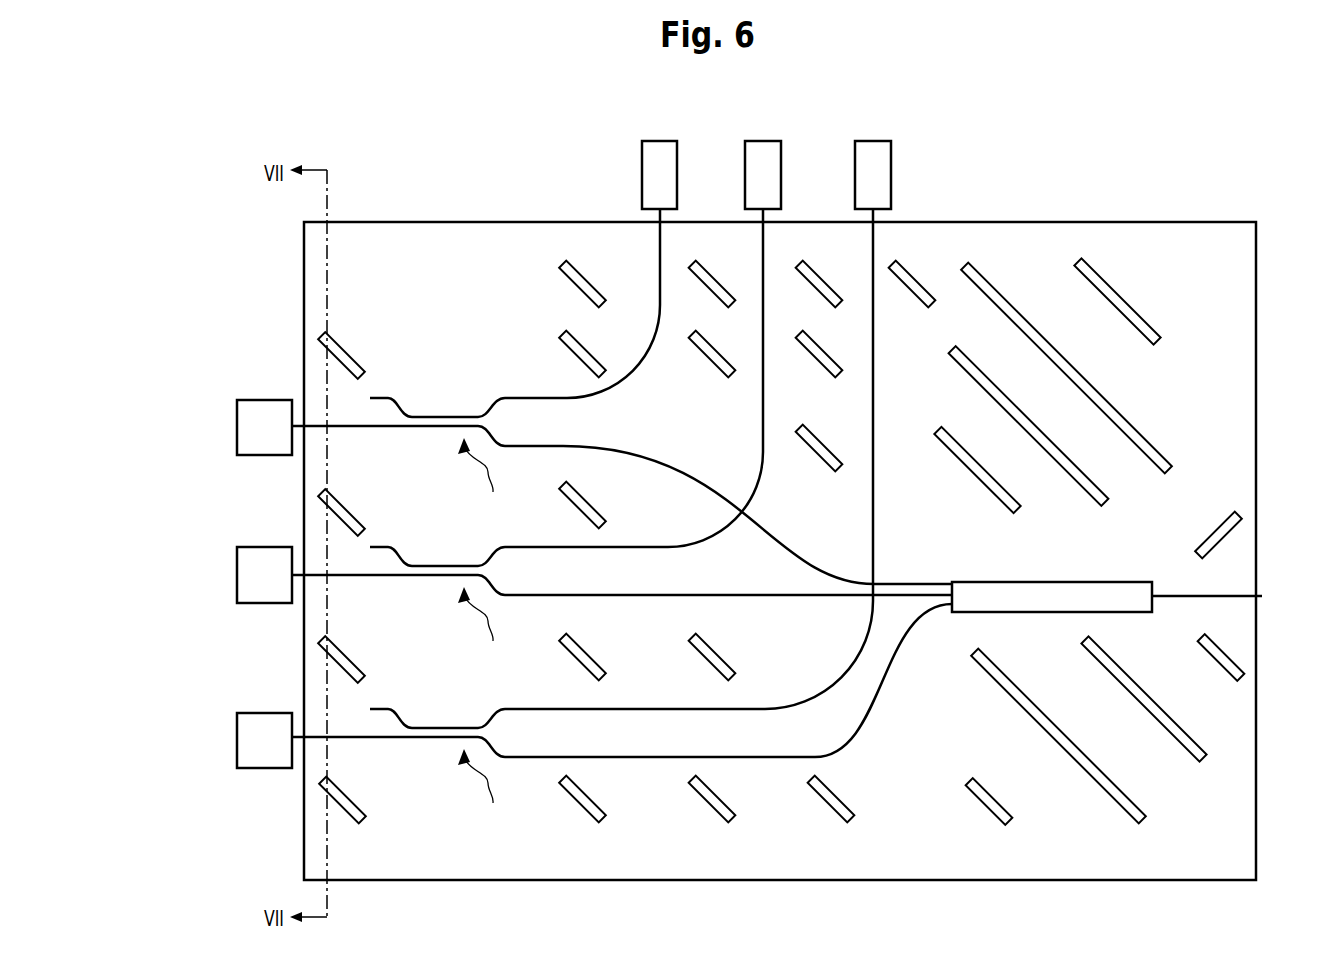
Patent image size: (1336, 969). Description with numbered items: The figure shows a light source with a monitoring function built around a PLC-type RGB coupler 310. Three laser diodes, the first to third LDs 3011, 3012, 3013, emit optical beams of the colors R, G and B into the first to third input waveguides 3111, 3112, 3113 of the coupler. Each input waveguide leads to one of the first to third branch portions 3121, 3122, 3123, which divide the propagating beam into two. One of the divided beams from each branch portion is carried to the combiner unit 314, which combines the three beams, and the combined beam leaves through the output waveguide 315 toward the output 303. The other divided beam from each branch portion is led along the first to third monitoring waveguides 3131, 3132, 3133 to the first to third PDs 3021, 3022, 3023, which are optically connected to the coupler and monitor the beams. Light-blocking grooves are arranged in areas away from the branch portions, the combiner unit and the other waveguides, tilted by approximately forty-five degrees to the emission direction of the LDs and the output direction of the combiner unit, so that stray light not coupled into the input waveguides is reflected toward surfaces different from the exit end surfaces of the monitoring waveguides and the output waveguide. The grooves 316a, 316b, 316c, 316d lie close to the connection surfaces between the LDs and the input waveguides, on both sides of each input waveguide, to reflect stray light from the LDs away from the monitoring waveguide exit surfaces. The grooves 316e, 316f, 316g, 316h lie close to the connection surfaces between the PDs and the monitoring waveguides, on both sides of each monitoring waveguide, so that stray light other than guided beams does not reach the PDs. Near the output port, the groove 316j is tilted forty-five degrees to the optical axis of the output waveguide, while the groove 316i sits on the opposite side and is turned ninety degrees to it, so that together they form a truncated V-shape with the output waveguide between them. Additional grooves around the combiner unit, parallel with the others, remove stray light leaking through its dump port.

The first LD 3011 is at (237, 427).
The second LD 3012 is at (237, 575).
The third LD 3013 is at (237, 738).
The first PD 3021 is at (658, 140).
The second PD 3022 is at (762, 140).
The third PD 3023 is at (872, 140).
The output light 303 is at (1258, 596).
The PLC-type RGB coupler 310 is at (1220, 221).
The first input waveguide 3111 is at (430, 428).
The second input waveguide 3112 is at (430, 577).
The third input waveguide 3113 is at (430, 739).
The first branch portion 3121 is at (490, 490).
The second branch portion 3122 is at (490, 635).
The third branch portion 3123 is at (490, 797).
The first monitoring waveguide 3131 is at (630, 375).
The second monitoring waveguide 3132 is at (763, 400).
The third monitoring waveguide 3133 is at (873, 400).
The combiner unit 314 is at (1062, 580).
The output waveguide 315 is at (1166, 592).
The light-blocking groove 316a is at (349, 346).
The light-blocking groove 316b is at (349, 503).
The light-blocking groove 316c is at (349, 651).
The light-blocking groove 316d is at (349, 791).
The light-blocking groove 316e is at (590, 277).
The light-blocking groove 316f is at (719, 278).
The light-blocking groove 316g is at (824, 278).
The light-blocking groove 316h is at (919, 278).
The light-blocking groove 316i is at (1217, 527).
The light-blocking groove 316j is at (1220, 666).